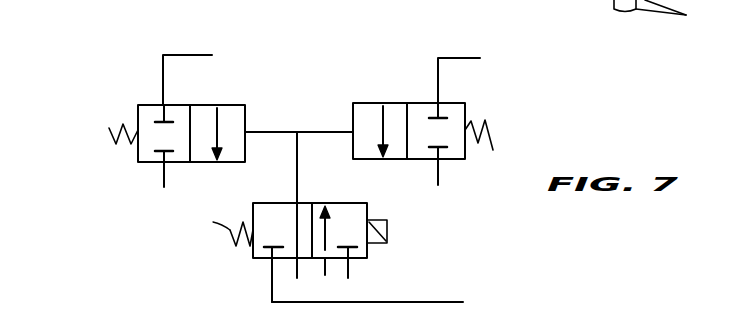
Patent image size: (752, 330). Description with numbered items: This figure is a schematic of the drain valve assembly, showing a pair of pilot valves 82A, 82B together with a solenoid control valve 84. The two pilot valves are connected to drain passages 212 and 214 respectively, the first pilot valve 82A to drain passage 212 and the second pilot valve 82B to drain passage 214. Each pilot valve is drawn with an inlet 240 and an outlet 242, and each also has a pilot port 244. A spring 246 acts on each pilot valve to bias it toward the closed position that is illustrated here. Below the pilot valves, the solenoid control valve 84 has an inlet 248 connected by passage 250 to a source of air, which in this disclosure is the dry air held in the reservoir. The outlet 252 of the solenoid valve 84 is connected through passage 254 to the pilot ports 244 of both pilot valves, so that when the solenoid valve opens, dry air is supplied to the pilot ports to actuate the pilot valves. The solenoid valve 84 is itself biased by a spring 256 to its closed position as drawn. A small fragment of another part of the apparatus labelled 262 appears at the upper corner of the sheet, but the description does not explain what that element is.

The pilot valve 82A is at (158, 116).
The pilot valve 82B is at (465, 112).
The solenoid control valve 84 is at (252, 259).
The drain passage 212 is at (192, 55).
The drain passage 214 is at (438, 84).
The inlet 240 is at (163, 106).
The outlet 242 is at (160, 166).
The pilot port 244 is at (350, 131).
The spring 246 is at (120, 143).
The inlet 248 is at (270, 264).
The passage 250 is at (398, 301).
The outlet 252 is at (298, 202).
The passage 254 is at (292, 160).
The spring 256 is at (216, 227).
The nozzle 262 is at (673, 15).